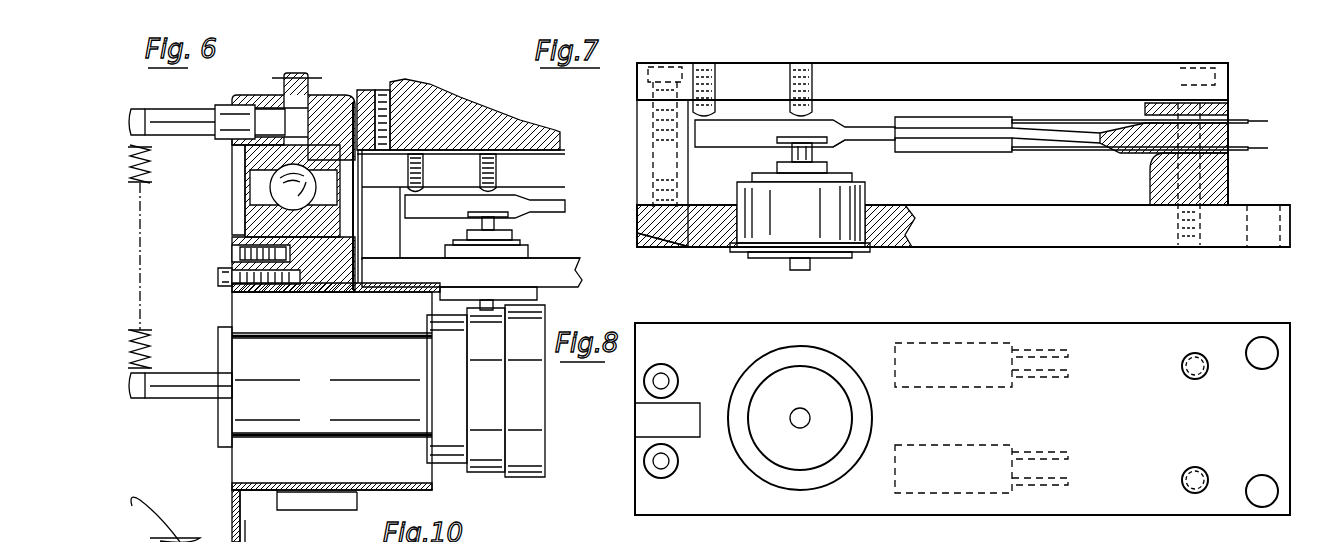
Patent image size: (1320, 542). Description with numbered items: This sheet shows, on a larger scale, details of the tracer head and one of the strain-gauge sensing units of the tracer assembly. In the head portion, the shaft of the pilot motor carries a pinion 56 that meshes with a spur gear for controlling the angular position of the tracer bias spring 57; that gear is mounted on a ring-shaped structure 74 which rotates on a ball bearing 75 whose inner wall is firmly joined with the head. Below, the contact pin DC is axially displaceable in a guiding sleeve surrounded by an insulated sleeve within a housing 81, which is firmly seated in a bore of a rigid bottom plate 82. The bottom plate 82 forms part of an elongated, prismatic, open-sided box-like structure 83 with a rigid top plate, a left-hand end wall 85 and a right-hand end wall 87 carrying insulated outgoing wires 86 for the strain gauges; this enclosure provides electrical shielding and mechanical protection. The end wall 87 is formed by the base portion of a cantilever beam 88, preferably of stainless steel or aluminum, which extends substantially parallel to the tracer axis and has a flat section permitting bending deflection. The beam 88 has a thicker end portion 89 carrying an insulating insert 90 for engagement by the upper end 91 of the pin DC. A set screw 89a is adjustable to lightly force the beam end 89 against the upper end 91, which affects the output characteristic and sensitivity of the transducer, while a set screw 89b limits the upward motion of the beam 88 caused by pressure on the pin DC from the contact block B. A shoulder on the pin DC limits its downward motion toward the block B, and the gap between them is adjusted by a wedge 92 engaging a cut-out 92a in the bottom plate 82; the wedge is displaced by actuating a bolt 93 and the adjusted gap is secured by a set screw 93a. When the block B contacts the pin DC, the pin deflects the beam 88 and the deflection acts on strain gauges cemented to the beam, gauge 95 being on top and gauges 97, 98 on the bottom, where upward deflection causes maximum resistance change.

In FIG. 6, the pinion 56 is at (296, 75).
In FIG. 6, the ring-shaped structure 74 is at (332, 96).
In FIG. 6, the ball bearing 75 is at (272, 185).
In FIG. 6, the tracer bias spring 57 is at (150, 263).
In FIG. 6, the bolt 93 is at (218, 278).
In FIG. 6, the set screw 93a is at (380, 92).
In FIG. 6, the wedge 92 is at (343, 292).
In FIG. 7, the cut-out 92a is at (655, 237).
In FIG. 8, the cut-out 92a is at (650, 418).
In FIG. 6, the contact block B is at (488, 448).
In FIG. 6, the box-like structure 83 is at (445, 130).
In FIG. 7, the box-like structure 83 is at (984, 78).
In FIG. 7, the left-hand end wall 85 is at (645, 170).
In FIG. 6, the cantilever beam 88 is at (548, 208).
In FIG. 7, the cantilever beam 88 is at (1055, 128).
In FIG. 6, the beam end portion 89 is at (460, 208).
In FIG. 7, the beam end portion 89 is at (728, 136).
In FIG. 6, the set screw 89a is at (408, 178).
In FIG. 7, the set screw 89a is at (718, 82).
In FIG. 6, the set screw 89b is at (500, 170).
In FIG. 7, the set screw 89b is at (812, 82).
In FIG. 7, the insulating insert 90 is at (826, 145).
In FIG. 7, the upper end of contact pin 91 is at (790, 150).
In FIG. 7, the strain gauge 95 is at (900, 122).
In FIG. 7, the strain gauge 97 is at (940, 152).
In FIG. 8, the strain gauge 97 is at (895, 360).
In FIG. 8, the strain gauge 98 is at (895, 464).
In FIG. 7, the outgoing wires 86 is at (1262, 125).
In FIG. 7, the right-hand end wall 87 is at (1228, 188).
In FIG. 6, the housing 81 is at (527, 255).
In FIG. 7, the housing 81 is at (838, 202).
In FIG. 8, the housing 81 is at (755, 462).
In FIG. 6, the bottom plate 82 is at (555, 270).
In FIG. 7, the bottom plate 82 is at (1043, 218).
In FIG. 8, the bottom plate 82 is at (1125, 338).
In FIG. 6, the contact pin DC is at (537, 292).
In FIG. 7, the contact pin DC is at (800, 270).
In FIG. 8, the contact pin DC is at (798, 418).